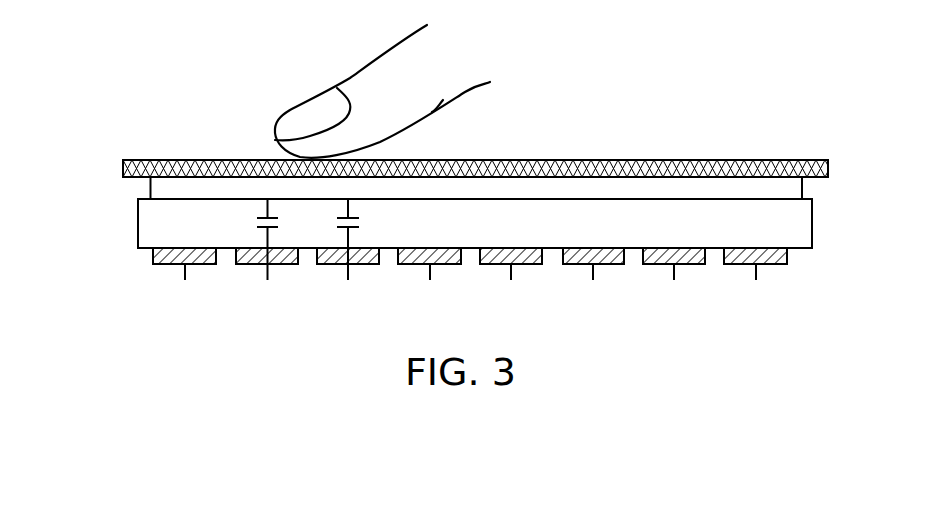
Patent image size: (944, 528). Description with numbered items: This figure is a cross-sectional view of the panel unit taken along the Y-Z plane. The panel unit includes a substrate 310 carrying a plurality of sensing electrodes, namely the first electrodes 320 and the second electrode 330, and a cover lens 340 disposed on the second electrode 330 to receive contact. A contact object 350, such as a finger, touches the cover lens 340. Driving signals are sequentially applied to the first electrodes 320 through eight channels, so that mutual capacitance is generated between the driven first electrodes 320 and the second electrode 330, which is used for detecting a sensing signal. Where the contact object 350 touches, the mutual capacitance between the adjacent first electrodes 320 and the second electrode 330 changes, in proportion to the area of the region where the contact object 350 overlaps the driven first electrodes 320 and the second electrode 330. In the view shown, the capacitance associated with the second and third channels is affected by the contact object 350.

The substrate 310 is at (147, 220).
The first electrodes 320 is at (155, 262).
The second electrode 330 is at (157, 185).
The cover lens 340 is at (608, 162).
The contact object 350 is at (390, 73).